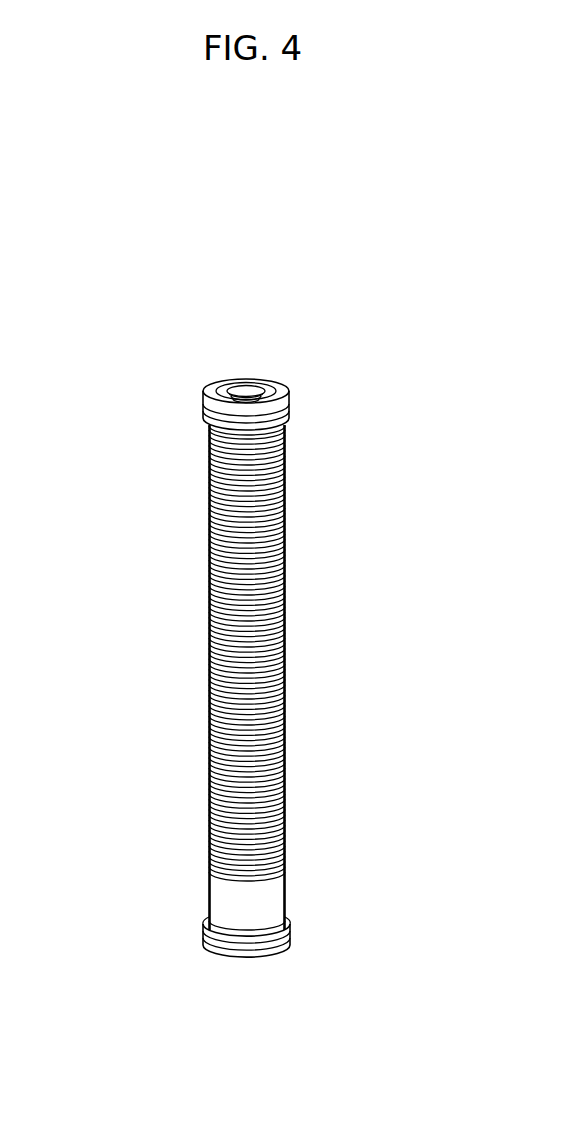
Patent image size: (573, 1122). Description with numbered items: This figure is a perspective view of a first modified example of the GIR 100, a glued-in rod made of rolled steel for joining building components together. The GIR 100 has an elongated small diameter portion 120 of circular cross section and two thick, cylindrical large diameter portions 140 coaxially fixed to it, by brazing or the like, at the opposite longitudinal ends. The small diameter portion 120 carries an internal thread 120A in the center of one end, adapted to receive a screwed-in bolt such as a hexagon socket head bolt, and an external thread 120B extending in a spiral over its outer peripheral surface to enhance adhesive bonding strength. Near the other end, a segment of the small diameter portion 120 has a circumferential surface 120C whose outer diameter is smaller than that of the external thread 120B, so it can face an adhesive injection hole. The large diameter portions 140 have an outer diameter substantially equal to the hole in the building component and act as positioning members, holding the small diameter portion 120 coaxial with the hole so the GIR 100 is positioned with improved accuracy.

The GIR 100 is at (312, 589).
The small diameter portion 120 is at (285, 777).
The internal thread 120A is at (215, 396).
The external thread 120B is at (230, 635).
The circumferential surface 120C is at (215, 903).
The large diameter portion 140 is at (290, 407).